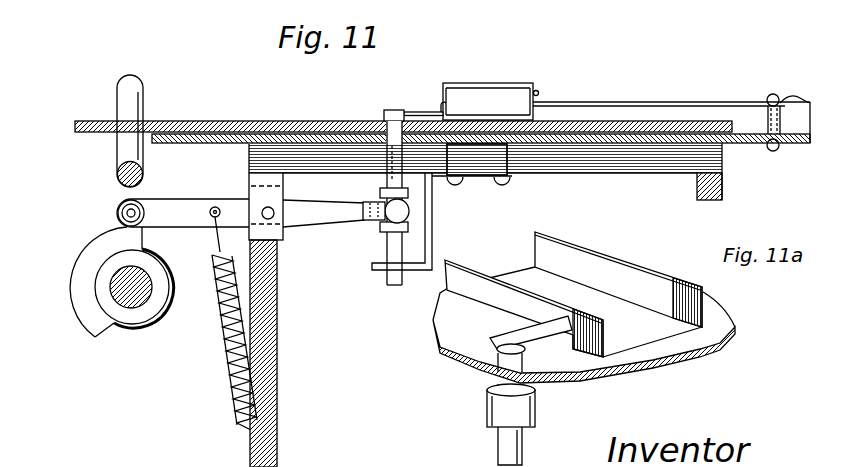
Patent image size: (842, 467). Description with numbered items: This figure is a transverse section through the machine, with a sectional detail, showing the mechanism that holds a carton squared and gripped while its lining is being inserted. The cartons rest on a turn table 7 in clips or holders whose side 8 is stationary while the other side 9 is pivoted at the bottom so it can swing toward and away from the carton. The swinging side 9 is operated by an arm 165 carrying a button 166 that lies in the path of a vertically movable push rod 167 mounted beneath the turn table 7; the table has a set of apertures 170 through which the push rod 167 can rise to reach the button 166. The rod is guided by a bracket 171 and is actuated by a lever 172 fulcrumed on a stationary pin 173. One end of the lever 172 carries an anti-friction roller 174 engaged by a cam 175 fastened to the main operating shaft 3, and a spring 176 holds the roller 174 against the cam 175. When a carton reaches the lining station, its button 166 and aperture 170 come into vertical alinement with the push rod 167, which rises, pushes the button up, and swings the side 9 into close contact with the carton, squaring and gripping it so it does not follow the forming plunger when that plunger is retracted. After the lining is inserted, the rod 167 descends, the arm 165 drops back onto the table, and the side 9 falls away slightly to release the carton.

In FIG. 11, the shaft 3 is at (140, 302).
In FIG. 11, the turn table 7 is at (208, 122).
In FIG. 11A, the turn table 7 is at (690, 360).
In FIG. 11, the side of clip or holder 8 is at (549, 101).
In FIG. 11A, the side of clip or holder 8 is at (643, 272).
In FIG. 11, the swinging side of clip or holder 9 is at (441, 97).
In FIG. 11A, the swinging side of clip or holder 9 is at (495, 281).
In FIG. 11, the arm 165 is at (407, 111).
In FIG. 11A, the arm 165 is at (496, 341).
In FIG. 11, the button 166 is at (386, 113).
In FIG. 11A, the button 166 is at (522, 350).
In FIG. 11, the push rod 167 is at (397, 278).
In FIG. 11A, the push rod 167 is at (532, 387).
In FIG. 11, the apertures 170 is at (383, 122).
In FIG. 11, the bracket 171 is at (428, 227).
In FIG. 11, the lever 172 is at (327, 213).
In FIG. 11, the stationary pin 173 is at (274, 210).
In FIG. 11, the anti-friction roller 174 is at (121, 207).
In FIG. 11, the cam 175 is at (92, 231).
In FIG. 11, the spring 176 is at (222, 362).